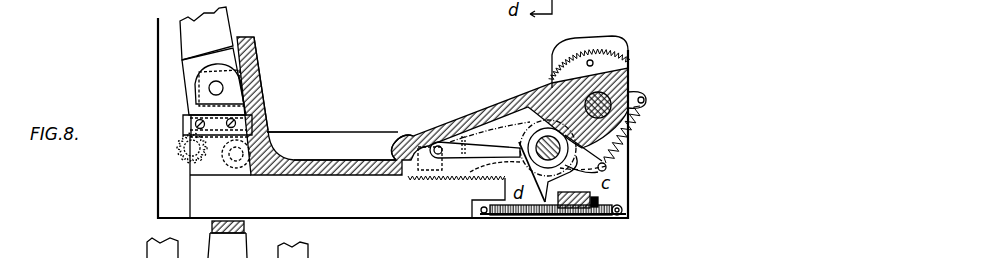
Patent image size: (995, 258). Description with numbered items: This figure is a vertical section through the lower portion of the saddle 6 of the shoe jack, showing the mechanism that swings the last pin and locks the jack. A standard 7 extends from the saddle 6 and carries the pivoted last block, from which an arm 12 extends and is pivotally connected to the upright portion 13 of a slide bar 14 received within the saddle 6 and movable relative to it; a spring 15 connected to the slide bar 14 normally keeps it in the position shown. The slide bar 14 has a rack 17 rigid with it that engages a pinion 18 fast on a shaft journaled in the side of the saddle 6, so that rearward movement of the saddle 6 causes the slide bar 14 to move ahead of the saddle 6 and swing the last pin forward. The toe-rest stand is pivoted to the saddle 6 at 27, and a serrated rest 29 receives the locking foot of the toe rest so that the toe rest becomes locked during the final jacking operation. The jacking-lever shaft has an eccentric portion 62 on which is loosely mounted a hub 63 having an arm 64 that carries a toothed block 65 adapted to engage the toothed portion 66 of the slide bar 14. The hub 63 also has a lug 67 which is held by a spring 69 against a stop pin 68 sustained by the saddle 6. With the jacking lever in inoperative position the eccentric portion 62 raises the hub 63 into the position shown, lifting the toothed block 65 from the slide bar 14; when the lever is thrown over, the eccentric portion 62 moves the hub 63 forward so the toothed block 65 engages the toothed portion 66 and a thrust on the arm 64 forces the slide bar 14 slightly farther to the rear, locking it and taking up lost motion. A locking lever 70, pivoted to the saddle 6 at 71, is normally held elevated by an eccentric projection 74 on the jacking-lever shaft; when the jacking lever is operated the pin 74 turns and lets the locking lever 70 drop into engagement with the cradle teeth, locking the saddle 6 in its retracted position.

The saddle 6 is at (326, 158).
The standard 7 is at (148, 247).
The arm 12 is at (220, 22).
The upright portion 13 is at (192, 88).
The slide bar 14 is at (389, 219).
The spring 15 is at (541, 214).
The rack 17 is at (183, 122).
The pinion 18 is at (173, 146).
The pivot 27 is at (612, 98).
The serrated rest 29 is at (607, 47).
The eccentric portion 62 is at (537, 137).
The hub 63 is at (543, 120).
The arm 64 is at (482, 138).
The toothed block 65 is at (420, 147).
The toothed portion 66 is at (447, 182).
The lug 67 is at (522, 216).
The stop pin 68 is at (558, 218).
The spring 69 is at (628, 138).
The locking lever 70 is at (298, 132).
The pivot 71 is at (268, 115).
The eccentric projection 74 is at (606, 166).